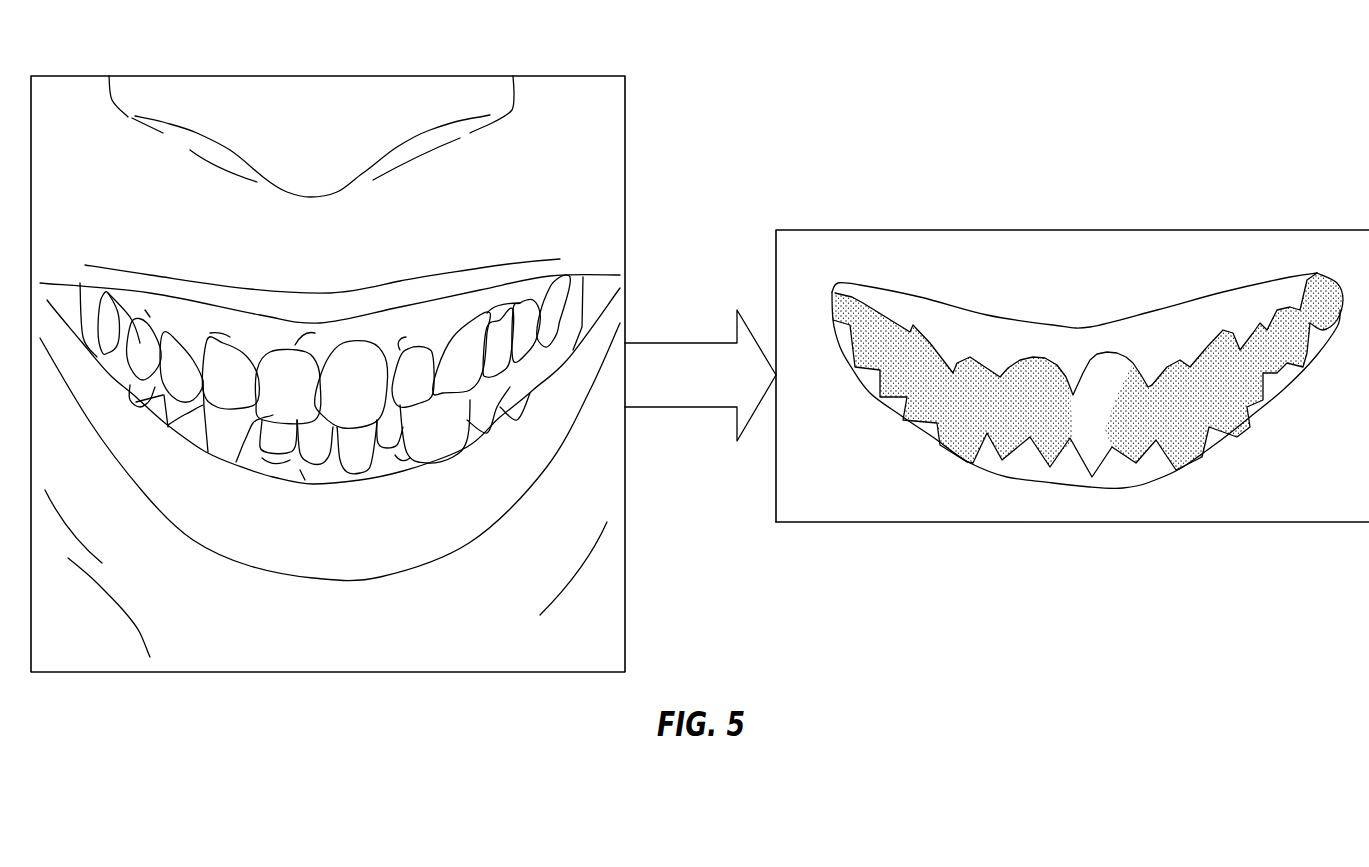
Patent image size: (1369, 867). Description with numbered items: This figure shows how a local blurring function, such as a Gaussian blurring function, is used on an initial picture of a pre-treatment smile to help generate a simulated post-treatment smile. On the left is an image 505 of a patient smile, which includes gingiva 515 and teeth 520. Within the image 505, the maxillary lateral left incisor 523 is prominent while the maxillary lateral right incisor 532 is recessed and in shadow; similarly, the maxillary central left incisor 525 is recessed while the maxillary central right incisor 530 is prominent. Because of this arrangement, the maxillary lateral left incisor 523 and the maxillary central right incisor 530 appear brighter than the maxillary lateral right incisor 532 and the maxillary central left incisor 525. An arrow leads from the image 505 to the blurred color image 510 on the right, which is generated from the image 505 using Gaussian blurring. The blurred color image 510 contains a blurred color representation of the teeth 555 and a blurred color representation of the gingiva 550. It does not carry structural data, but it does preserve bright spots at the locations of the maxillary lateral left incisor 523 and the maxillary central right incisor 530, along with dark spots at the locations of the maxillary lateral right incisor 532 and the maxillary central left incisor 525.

The image 505 is at (329, 338).
The blurred color image 510 is at (1072, 344).
The gingiva 515 is at (168, 308).
The teeth 520 is at (473, 332).
The maxillary lateral left incisor 523 is at (220, 362).
The maxillary central left incisor 525 is at (290, 373).
The maxillary central right incisor 530 is at (355, 363).
The maxillary lateral right incisor 532 is at (412, 367).
The blurred color representation of the gingiva 550 is at (962, 345).
The blurred color representation of the teeth 555 is at (1176, 372).